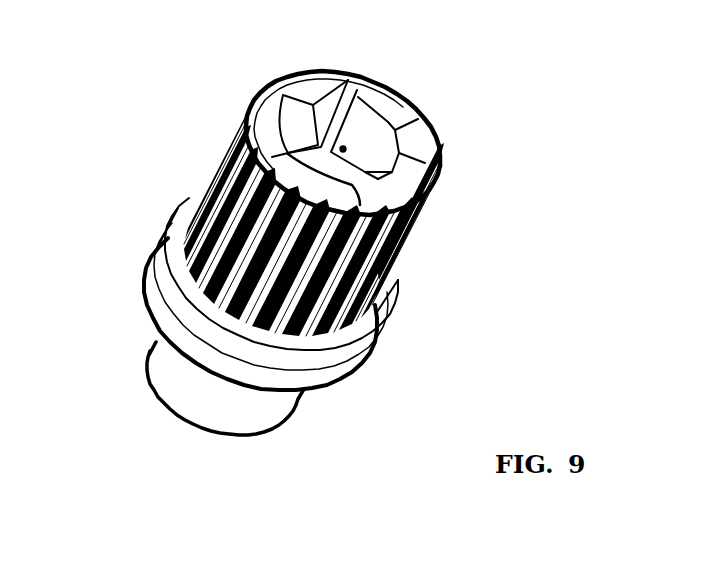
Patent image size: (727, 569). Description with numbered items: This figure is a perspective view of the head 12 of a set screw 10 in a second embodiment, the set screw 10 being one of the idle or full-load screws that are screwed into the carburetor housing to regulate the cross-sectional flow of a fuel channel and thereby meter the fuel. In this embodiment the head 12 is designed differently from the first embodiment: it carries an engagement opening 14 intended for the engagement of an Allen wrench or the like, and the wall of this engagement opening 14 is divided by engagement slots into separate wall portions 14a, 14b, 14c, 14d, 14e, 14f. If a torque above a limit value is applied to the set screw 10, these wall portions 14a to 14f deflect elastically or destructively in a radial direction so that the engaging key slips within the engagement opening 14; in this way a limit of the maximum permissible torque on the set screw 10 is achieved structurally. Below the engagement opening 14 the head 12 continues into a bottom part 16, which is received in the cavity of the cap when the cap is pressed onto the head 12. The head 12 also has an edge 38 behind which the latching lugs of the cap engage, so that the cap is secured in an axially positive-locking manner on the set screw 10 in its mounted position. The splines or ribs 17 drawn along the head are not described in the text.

The set screw 10 is at (177, 380).
The head of the set screw 12 is at (437, 103).
The engagement opening 14 is at (267, 156).
The wall portion 14a is at (380, 92).
The wall portion 14b is at (417, 150).
The wall portion 14c is at (388, 188).
The wall portion 14d is at (410, 267).
The wall portion 14e is at (293, 127).
The wall portion 14f is at (317, 85).
The bottom part of the head 16 is at (373, 382).
The splines 17 is at (207, 239).
The edge of the head 38 is at (143, 297).